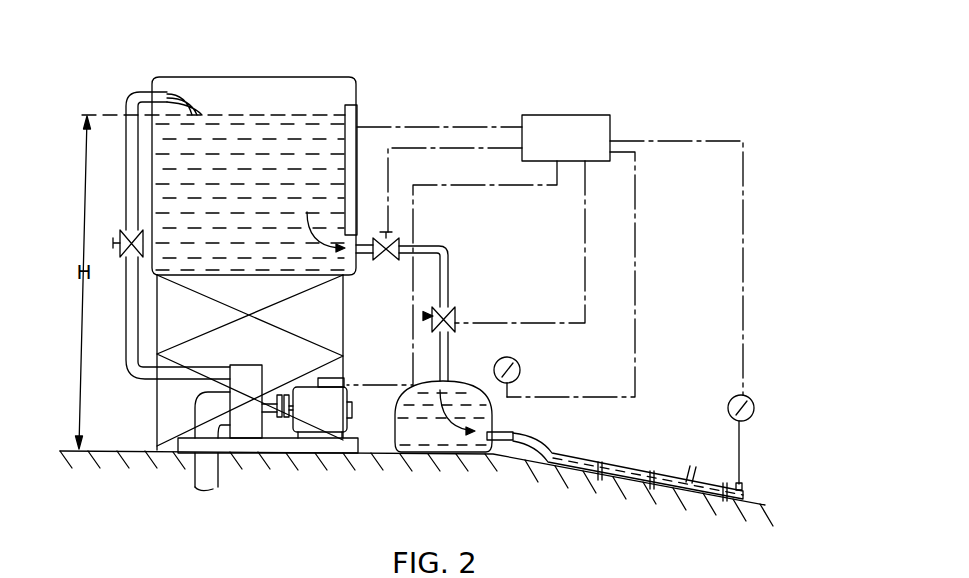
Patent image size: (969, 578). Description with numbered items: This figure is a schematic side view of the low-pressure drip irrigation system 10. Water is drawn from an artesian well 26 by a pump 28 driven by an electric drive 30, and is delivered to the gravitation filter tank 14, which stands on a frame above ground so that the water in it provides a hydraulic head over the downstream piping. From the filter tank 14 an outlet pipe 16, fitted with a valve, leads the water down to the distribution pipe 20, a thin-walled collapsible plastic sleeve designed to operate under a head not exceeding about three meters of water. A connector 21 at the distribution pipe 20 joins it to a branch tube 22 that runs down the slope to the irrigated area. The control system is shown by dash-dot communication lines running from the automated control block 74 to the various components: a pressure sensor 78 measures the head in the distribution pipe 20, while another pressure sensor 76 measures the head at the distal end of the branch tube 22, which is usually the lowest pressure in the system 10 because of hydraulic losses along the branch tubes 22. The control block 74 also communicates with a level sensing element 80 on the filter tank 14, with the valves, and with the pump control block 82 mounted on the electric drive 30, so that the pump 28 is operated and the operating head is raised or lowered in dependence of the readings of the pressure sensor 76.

The low-pressure drip irrigation system 10 is at (608, 105).
The gravitation filter tank 14 is at (292, 77).
The outlet pipes 16 is at (429, 246).
The distribution pipe 20 is at (437, 439).
The connectors 21 is at (490, 432).
The branch tubes 22 is at (627, 466).
The artesian well 26 is at (212, 470).
The pump 28 is at (258, 411).
The electric drive 30 is at (332, 421).
The automated control block 74 is at (553, 150).
The pressure sensor 76 is at (745, 400).
The pressure sensor 78 is at (522, 373).
The level sensor 80 is at (357, 117).
The pump control block 82 is at (347, 378).